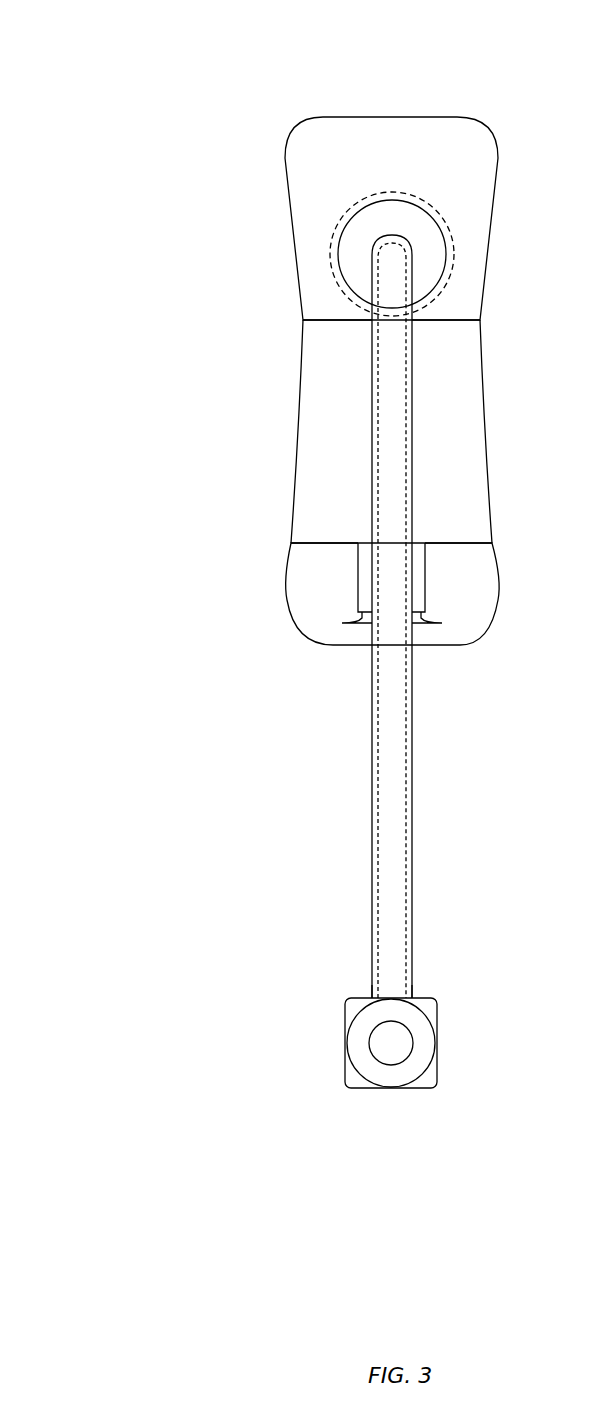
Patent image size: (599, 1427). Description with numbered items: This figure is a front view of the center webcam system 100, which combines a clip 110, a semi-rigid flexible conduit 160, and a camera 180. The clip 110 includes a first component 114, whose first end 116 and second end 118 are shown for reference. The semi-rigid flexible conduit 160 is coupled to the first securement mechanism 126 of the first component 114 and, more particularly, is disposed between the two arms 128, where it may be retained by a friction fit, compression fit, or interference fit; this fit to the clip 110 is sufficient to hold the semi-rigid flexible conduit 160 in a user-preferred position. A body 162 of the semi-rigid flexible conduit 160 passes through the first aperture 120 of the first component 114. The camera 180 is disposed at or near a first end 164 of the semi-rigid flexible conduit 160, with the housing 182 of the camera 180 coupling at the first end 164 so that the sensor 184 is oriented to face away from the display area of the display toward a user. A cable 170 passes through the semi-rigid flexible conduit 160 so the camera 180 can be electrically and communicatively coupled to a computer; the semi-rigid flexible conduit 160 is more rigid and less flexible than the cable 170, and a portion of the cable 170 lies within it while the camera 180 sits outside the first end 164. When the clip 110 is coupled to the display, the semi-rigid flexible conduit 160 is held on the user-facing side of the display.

The center webcam system 100 is at (86, 86).
The clip 110 is at (198, 295).
The first component 114 is at (350, 466).
The first end 116 is at (330, 645).
The second end 118 is at (441, 117).
The first aperture 120 is at (442, 235).
The first securement mechanism 126 is at (422, 625).
The arms 128 is at (355, 573).
The semi-rigid flexible conduit 160 is at (412, 800).
The body 162 is at (412, 262).
The first end 164 is at (410, 995).
The cable 170 is at (407, 875).
The camera 180 is at (358, 997).
The housing 182 is at (348, 1028).
The sensor 184 is at (412, 1048).